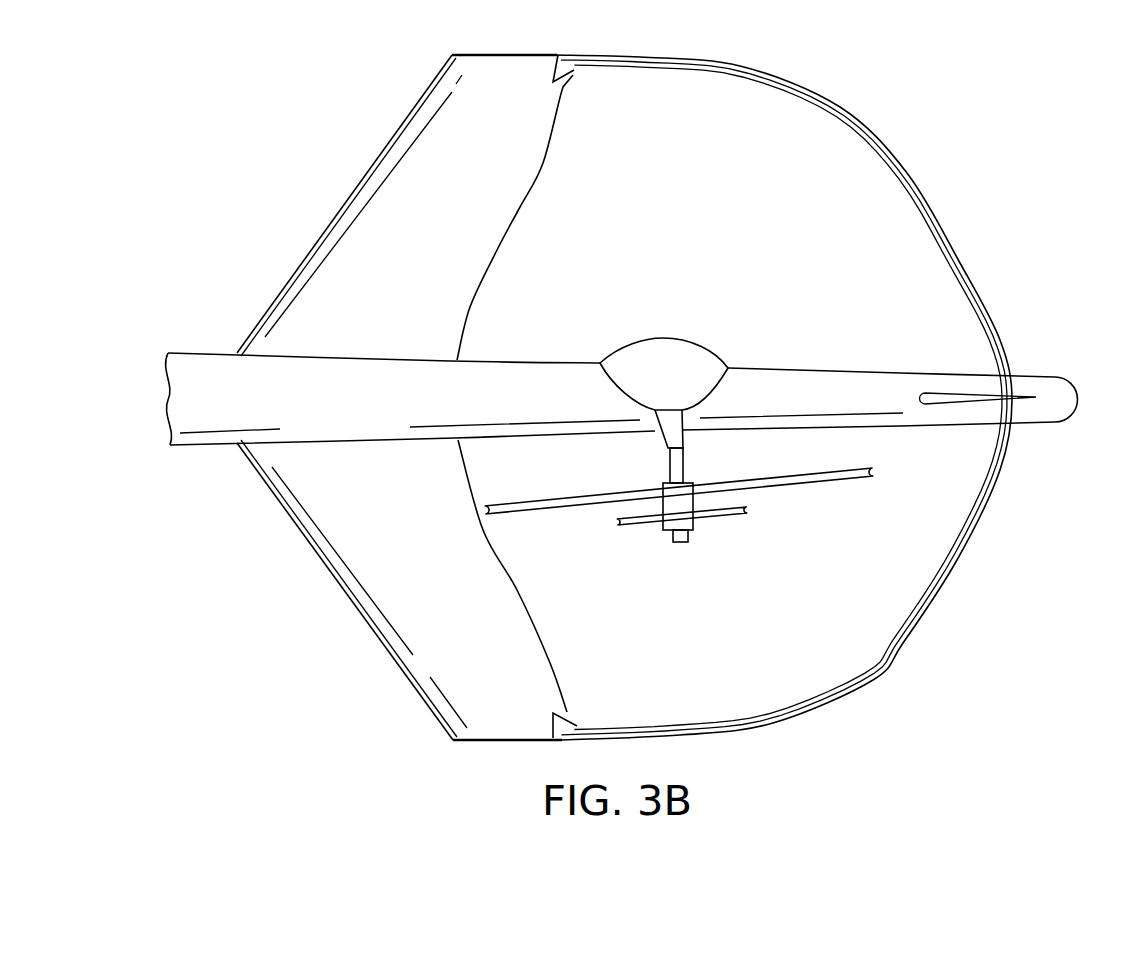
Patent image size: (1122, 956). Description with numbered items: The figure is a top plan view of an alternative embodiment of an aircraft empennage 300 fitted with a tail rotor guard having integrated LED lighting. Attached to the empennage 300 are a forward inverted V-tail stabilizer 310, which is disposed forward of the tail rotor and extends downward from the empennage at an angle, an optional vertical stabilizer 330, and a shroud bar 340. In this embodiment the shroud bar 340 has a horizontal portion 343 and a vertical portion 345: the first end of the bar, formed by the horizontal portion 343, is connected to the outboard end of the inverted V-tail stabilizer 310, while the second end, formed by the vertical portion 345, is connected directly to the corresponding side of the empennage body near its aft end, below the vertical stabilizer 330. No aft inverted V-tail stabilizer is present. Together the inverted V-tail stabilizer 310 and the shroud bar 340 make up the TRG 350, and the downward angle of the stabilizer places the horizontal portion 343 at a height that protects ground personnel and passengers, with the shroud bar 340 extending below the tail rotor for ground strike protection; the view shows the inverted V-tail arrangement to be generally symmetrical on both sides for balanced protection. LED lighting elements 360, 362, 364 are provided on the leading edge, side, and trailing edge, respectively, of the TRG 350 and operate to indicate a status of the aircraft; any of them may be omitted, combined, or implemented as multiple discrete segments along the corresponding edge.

The aircraft empennage 300 is at (208, 183).
The forward inverted V-tail stabilizer 310 is at (435, 665).
The vertical stabilizer 330 is at (950, 395).
The shroud bar 340 is at (940, 631).
The horizontal portion 343 is at (650, 725).
The vertical portion 345 is at (945, 548).
The TRG 350 is at (323, 609).
The LED lighting element 360 is at (287, 517).
The LED lighting element 362 is at (777, 727).
The LED lighting element 364 is at (977, 523).